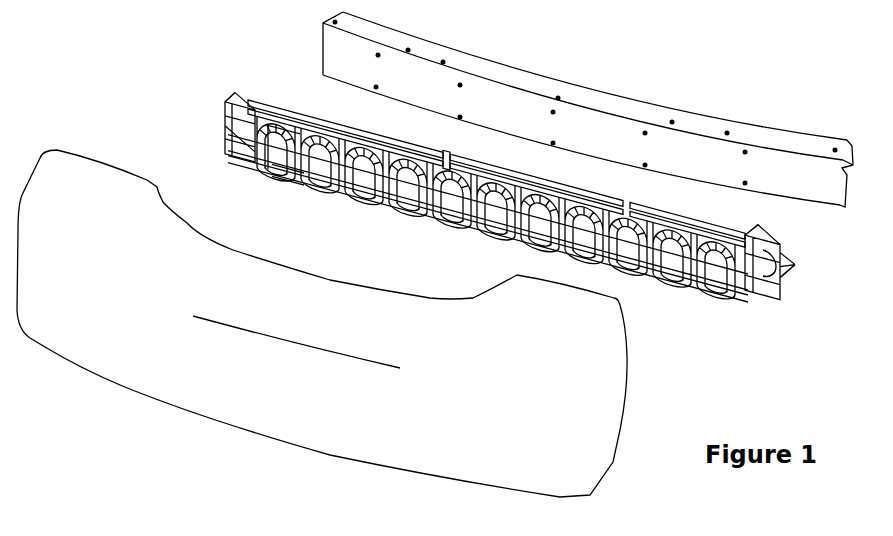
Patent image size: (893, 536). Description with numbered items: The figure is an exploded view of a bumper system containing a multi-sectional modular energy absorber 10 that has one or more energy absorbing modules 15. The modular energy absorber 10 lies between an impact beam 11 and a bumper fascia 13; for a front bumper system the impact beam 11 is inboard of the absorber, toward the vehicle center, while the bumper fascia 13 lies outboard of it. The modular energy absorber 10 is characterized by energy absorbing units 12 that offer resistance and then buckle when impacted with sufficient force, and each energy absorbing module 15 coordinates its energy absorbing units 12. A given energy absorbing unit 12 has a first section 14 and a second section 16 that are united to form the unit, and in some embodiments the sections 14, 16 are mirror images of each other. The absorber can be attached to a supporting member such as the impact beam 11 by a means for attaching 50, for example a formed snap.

The multi-sectional modular energy absorber 10 is at (793, 277).
The impact beam 11 is at (708, 127).
The energy absorbing unit 12 is at (727, 286).
The bumper fascia 13 is at (610, 377).
The first section 14 is at (287, 132).
The energy absorbing module 15 is at (662, 217).
The second section 16 is at (283, 170).
The means for attaching 50 is at (405, 155).